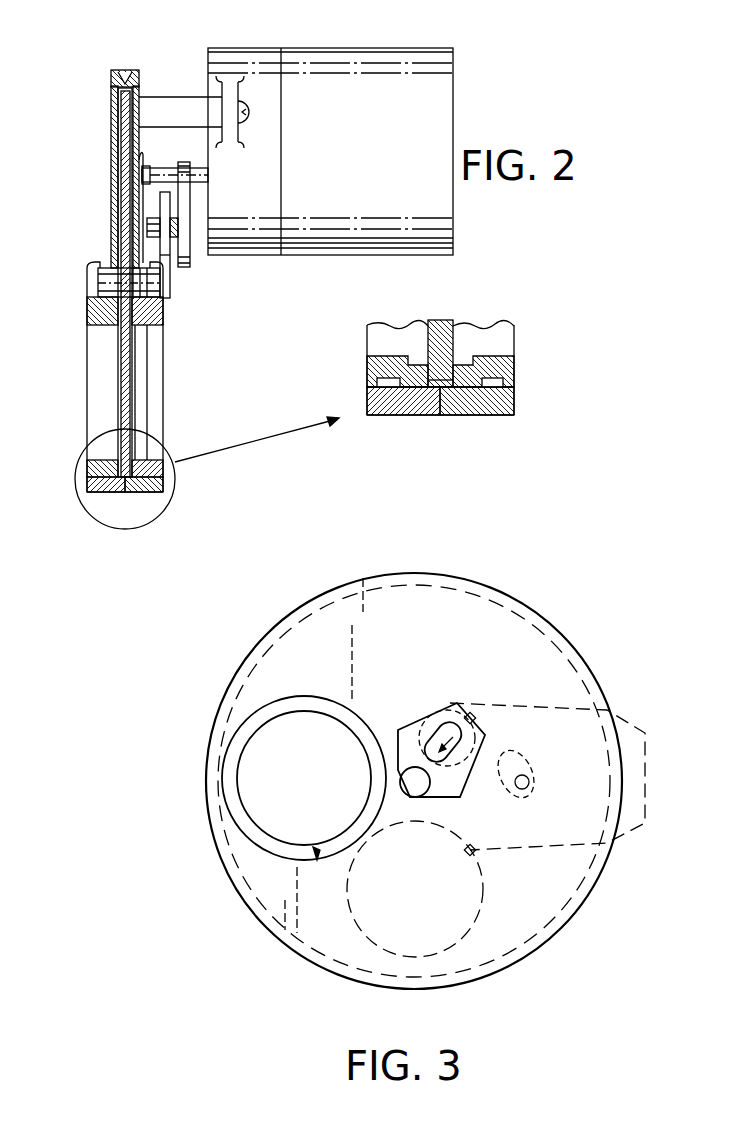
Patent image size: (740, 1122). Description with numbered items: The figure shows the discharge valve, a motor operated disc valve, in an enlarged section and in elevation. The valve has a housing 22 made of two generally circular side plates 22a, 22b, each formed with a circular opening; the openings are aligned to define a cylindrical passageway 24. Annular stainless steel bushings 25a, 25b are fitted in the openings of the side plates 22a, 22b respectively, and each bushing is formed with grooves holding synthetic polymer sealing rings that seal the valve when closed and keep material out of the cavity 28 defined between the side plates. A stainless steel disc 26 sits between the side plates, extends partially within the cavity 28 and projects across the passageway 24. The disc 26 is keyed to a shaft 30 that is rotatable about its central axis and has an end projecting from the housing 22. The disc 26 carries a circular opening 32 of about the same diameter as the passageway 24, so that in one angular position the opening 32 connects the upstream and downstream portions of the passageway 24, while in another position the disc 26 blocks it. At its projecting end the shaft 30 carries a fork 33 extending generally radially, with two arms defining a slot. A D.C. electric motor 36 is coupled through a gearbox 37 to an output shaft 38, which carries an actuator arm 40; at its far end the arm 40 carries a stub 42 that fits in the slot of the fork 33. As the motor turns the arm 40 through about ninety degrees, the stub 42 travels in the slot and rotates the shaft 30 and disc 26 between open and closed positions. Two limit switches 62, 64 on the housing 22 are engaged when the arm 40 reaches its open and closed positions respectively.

In FIG. 2, the housing 22 is at (125, 62).
In FIG. 3, the housing 22 is at (547, 614).
In FIG. 2, the side plate 22a is at (111, 117).
In FIG. 2, the side plate 22b is at (140, 77).
In FIG. 2, the cylindrical passageway 24 is at (156, 402).
In FIG. 3, the cylindrical passageway 24 is at (308, 728).
In FIG. 2, the annular bushing 25a is at (88, 468).
In FIG. 2, the annular bushing 25b is at (155, 464).
In FIG. 3, the annular bushing 25b is at (265, 843).
In FIG. 2, the disc 26 is at (121, 200).
In FIG. 3, the disc 26 is at (595, 690).
In FIG. 2, the cavity 28 is at (113, 172).
In FIG. 2, the shaft 30 is at (102, 279).
In FIG. 3, the shaft 30 is at (414, 797).
In FIG. 3, the circular opening 32 is at (480, 897).
In FIG. 2, the fork 33 is at (172, 275).
In FIG. 3, the fork 33 is at (462, 773).
In FIG. 2, the D.C. electric motor 36 is at (403, 50).
In FIG. 3, the D.C. electric motor 36 is at (646, 824).
In FIG. 2, the gearbox 37 is at (232, 50).
In FIG. 3, the gearbox 37 is at (563, 794).
In FIG. 2, the output shaft 38 is at (168, 168).
In FIG. 3, the output shaft 38 is at (529, 779).
In FIG. 2, the actuator arm 40 is at (192, 262).
In FIG. 3, the actuator arm 40 is at (505, 752).
In FIG. 2, the stub 42 is at (175, 213).
In FIG. 3, the stub 42 is at (478, 730).
In FIG. 3, the limit switch 62 is at (477, 852).
In FIG. 3, the limit switch 64 is at (472, 712).